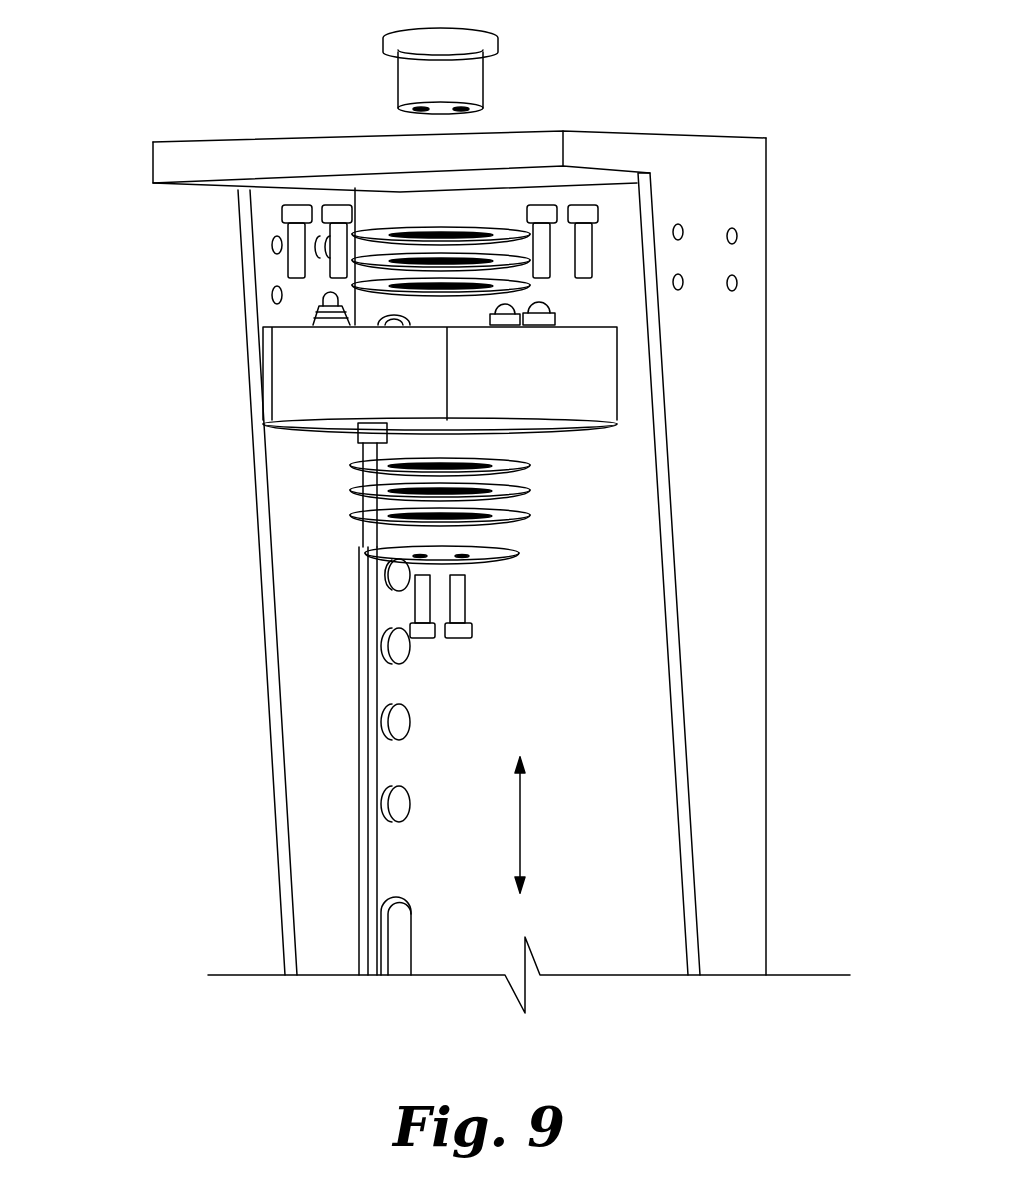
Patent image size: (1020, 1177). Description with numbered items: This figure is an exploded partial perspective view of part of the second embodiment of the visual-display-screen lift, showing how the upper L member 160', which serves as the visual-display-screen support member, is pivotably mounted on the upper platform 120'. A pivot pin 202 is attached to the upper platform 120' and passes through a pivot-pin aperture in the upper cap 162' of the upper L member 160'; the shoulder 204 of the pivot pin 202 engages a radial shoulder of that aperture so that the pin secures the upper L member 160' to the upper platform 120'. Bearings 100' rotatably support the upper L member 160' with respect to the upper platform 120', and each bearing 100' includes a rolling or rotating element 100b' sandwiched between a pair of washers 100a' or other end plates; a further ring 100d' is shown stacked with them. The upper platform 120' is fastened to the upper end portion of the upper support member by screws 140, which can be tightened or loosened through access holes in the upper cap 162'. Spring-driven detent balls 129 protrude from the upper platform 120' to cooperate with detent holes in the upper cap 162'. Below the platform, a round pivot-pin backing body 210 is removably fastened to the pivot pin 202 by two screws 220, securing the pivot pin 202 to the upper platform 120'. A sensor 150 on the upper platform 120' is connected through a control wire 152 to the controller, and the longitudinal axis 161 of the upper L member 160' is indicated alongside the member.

The shoulder 204 is at (498, 42).
The pivot pin 202 is at (450, 78).
The ring 100d' is at (507, 169).
The upper cap 162' is at (431, 148).
The screws 140 is at (338, 233).
The detent ball 129 is at (317, 307).
The upper platform 120' is at (378, 380).
The washers 100a' is at (452, 384).
The rolling or rotating element 100b' is at (455, 384).
The upper L member 160' is at (500, 588).
The sensor 150 is at (378, 436).
The bearing 100' is at (482, 495).
The pivot-pin backing body 210 is at (519, 553).
The screw 220 is at (422, 600).
The longitudinal axis 161 is at (547, 825).
The control wire 152 is at (377, 870).